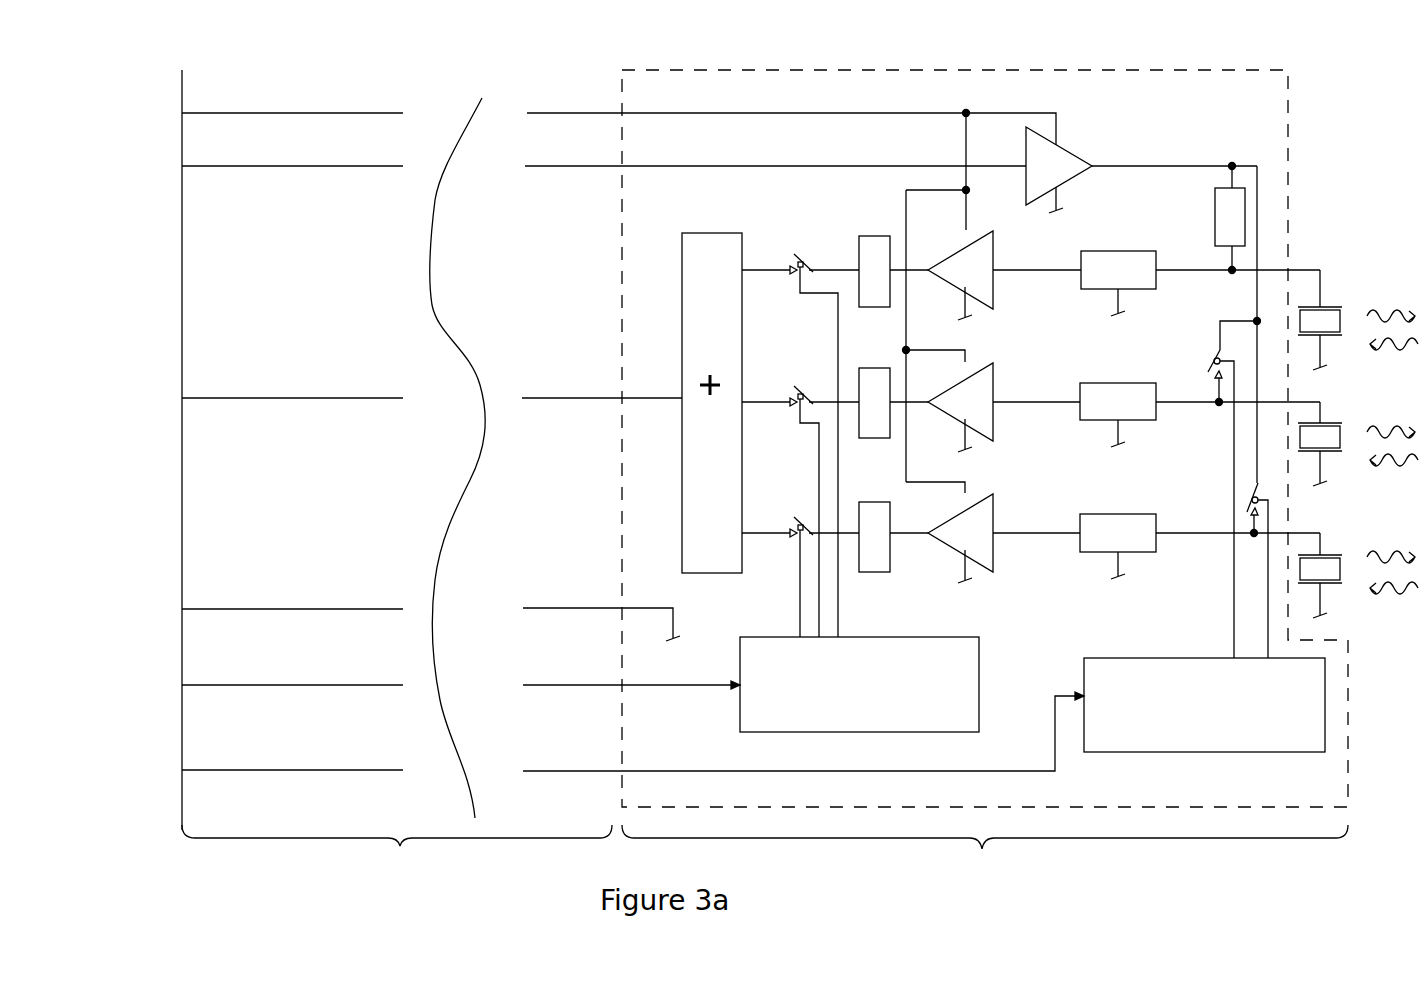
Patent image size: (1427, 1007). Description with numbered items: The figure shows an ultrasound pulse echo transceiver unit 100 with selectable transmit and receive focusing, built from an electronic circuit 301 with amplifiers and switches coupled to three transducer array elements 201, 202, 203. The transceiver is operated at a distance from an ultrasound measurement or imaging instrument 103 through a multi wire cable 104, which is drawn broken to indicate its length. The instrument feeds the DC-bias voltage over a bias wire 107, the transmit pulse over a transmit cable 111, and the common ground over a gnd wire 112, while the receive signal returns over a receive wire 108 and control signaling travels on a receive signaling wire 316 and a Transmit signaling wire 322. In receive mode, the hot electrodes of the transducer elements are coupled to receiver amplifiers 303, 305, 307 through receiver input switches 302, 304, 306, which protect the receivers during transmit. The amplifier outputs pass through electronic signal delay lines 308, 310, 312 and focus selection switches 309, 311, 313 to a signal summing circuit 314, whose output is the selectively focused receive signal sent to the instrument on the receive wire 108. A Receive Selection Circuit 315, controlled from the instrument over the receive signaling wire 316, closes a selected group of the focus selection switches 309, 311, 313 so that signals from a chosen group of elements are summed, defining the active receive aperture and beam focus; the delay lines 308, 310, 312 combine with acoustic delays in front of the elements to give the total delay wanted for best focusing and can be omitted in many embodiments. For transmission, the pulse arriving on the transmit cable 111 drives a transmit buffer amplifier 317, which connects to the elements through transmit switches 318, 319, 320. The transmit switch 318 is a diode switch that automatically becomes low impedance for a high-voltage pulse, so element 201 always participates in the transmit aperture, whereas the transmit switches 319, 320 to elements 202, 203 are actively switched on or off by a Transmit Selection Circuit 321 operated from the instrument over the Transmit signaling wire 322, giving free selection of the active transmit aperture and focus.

The ultrasound pulse echo transceiver unit 100 is at (985, 861).
The ultrasound measurement or imaging instrument 103 is at (298, 450).
The multi wire cable 104 is at (397, 852).
The bias wire 107 is at (791, 140).
The receive wire 108 is at (602, 385).
The transmit cable 111 is at (775, 152).
The gnd wire 112 is at (601, 611).
The transducer array element 201 is at (1358, 320).
The transducer array element 202 is at (1358, 441).
The transducer array element 203 is at (1358, 575).
The electronic circuit 301 is at (985, 421).
The receiver input switch 302 is at (1200, 283).
The receiver amplifier 303 is at (1004, 275).
The receiver input switch 304 is at (1200, 415).
The receiver amplifier 305 is at (1004, 407).
The receiver input switch 306 is at (1200, 546).
The receiver amplifier 307 is at (1004, 538).
The electronic signal delay line 308 is at (890, 256).
The focus selection switch 309 is at (817, 432).
The electronic signal delay line 310 is at (890, 388).
The focus selection switch 311 is at (817, 499).
The electronic signal delay line 312 is at (890, 524).
The focus selection switch 313 is at (817, 565).
The signal summing circuit 314 is at (736, 403).
The Receive Selection Circuit 315 is at (859, 684).
The receive signaling wire 316 is at (631, 674).
The transmit buffer amplifier 317 is at (1141, 170).
The transmit switch 318 is at (1211, 220).
The transmit switch 319 is at (1218, 412).
The transmit switch 320 is at (1227, 569).
The Transmit Selection Circuit 321 is at (1204, 705).
The Transmit signaling wire 322 is at (803, 731).